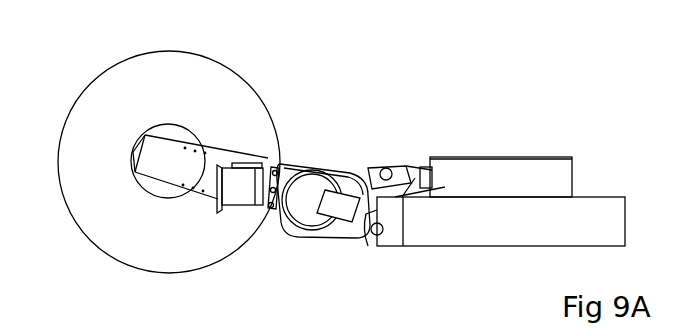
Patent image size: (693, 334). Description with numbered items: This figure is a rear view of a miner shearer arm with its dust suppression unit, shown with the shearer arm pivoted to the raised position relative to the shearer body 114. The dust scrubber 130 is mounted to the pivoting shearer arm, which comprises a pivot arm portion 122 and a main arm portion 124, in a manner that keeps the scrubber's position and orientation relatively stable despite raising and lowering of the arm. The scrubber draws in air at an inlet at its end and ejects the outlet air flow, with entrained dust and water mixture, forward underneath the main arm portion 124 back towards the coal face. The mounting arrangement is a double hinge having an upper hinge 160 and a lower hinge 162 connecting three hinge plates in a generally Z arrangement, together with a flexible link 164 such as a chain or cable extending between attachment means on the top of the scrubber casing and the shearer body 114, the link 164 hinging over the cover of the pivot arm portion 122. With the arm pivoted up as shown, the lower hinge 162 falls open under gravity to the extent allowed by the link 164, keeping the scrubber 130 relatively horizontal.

The shearer body 114 is at (531, 229).
The pivot arm portion 122 is at (316, 215).
The main arm portion 124 is at (227, 138).
The dust scrubber 130 is at (243, 207).
The upper hinge 160 is at (288, 156).
The lower hinge 162 is at (270, 220).
The flexible link 164 is at (274, 147).